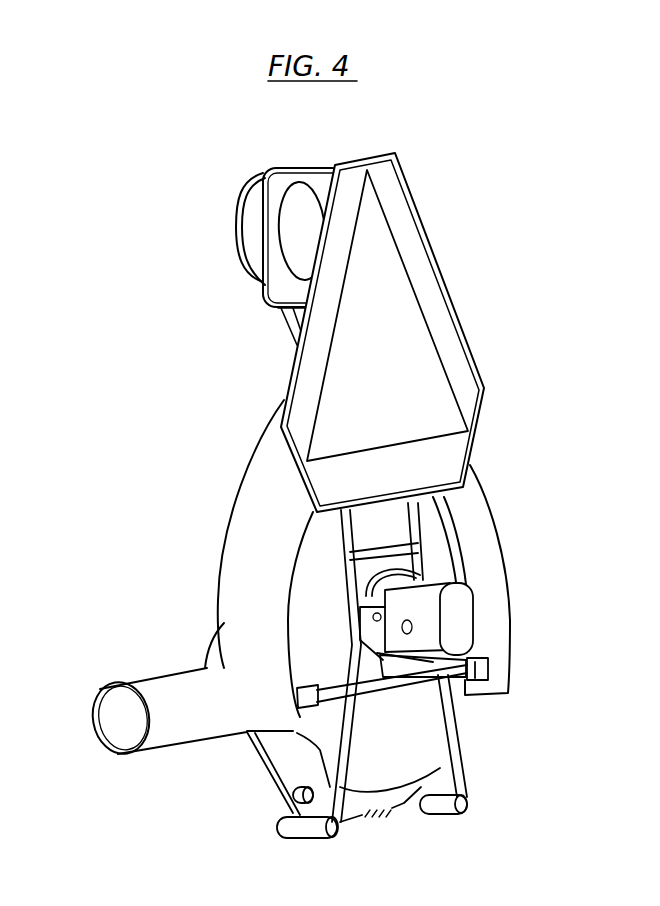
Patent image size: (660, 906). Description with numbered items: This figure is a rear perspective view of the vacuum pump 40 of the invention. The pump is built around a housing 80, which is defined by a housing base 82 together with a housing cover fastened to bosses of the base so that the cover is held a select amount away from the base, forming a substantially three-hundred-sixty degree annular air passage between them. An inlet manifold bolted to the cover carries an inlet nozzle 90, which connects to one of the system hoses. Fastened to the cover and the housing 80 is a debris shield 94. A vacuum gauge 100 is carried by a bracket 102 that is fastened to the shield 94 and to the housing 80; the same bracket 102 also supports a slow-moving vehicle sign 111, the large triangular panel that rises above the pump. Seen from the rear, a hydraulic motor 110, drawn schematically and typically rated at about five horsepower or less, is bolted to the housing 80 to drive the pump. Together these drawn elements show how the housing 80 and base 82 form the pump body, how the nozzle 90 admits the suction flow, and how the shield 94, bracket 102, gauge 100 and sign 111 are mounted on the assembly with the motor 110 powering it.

The vacuum pump 40 is at (505, 455).
The housing 80 is at (473, 739).
The housing base 82 is at (320, 745).
The inlet nozzle 90 is at (137, 677).
The debris shield 94 is at (497, 525).
The vacuum gauge 100 is at (237, 235).
The bracket 102 is at (283, 323).
The hydraulic motor 110 is at (470, 618).
The slow-moving vehicle sign 111 is at (452, 307).